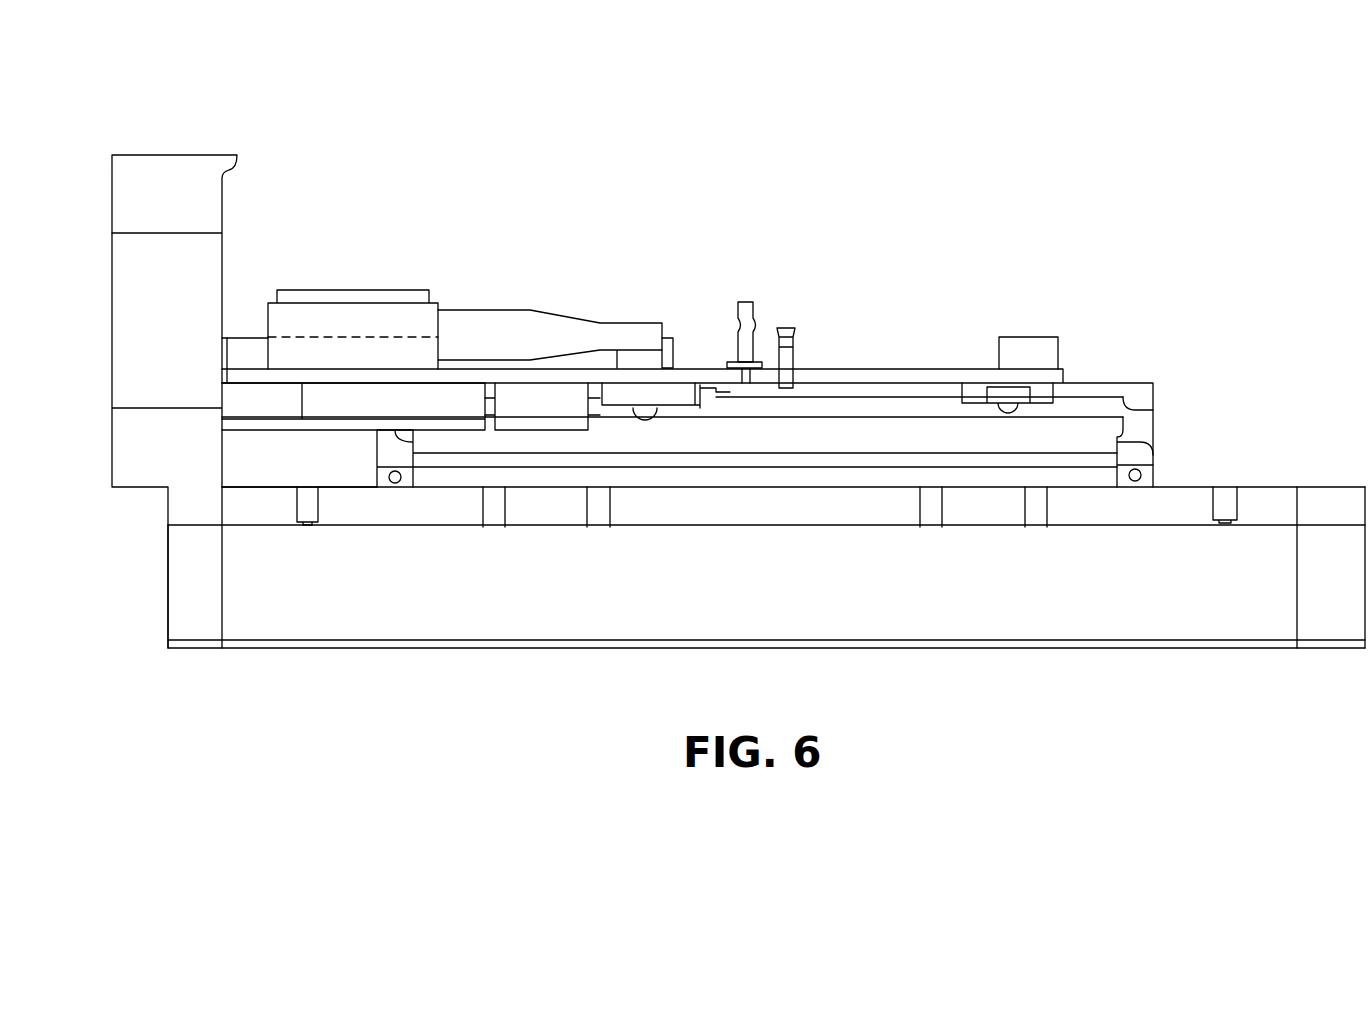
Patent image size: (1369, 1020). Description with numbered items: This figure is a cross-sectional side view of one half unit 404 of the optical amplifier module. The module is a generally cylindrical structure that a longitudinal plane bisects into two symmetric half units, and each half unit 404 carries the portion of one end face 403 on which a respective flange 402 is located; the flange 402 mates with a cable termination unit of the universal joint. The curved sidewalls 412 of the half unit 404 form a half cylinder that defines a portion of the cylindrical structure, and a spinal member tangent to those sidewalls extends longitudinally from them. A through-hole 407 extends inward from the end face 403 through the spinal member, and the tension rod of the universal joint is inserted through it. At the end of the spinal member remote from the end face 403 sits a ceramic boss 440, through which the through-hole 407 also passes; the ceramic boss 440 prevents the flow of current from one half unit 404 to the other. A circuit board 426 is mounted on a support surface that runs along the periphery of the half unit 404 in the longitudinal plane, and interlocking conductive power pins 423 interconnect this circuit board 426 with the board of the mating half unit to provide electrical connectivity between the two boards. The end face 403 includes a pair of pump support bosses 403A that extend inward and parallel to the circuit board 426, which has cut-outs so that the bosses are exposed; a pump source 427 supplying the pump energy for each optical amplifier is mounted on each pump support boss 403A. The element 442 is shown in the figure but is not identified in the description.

The flange 402 is at (120, 348).
The end face 403 is at (168, 167).
The pump support boss 403A is at (273, 408).
The pump source 427 is at (350, 320).
The sensor 442 is at (668, 337).
The interlocking conductive power pin 423 is at (782, 327).
The circuit board 426 is at (882, 375).
The curved sidewall 412 is at (1188, 495).
The through-hole 407 is at (377, 623).
The half unit 404 is at (593, 652).
The ceramic boss 440 is at (1333, 622).